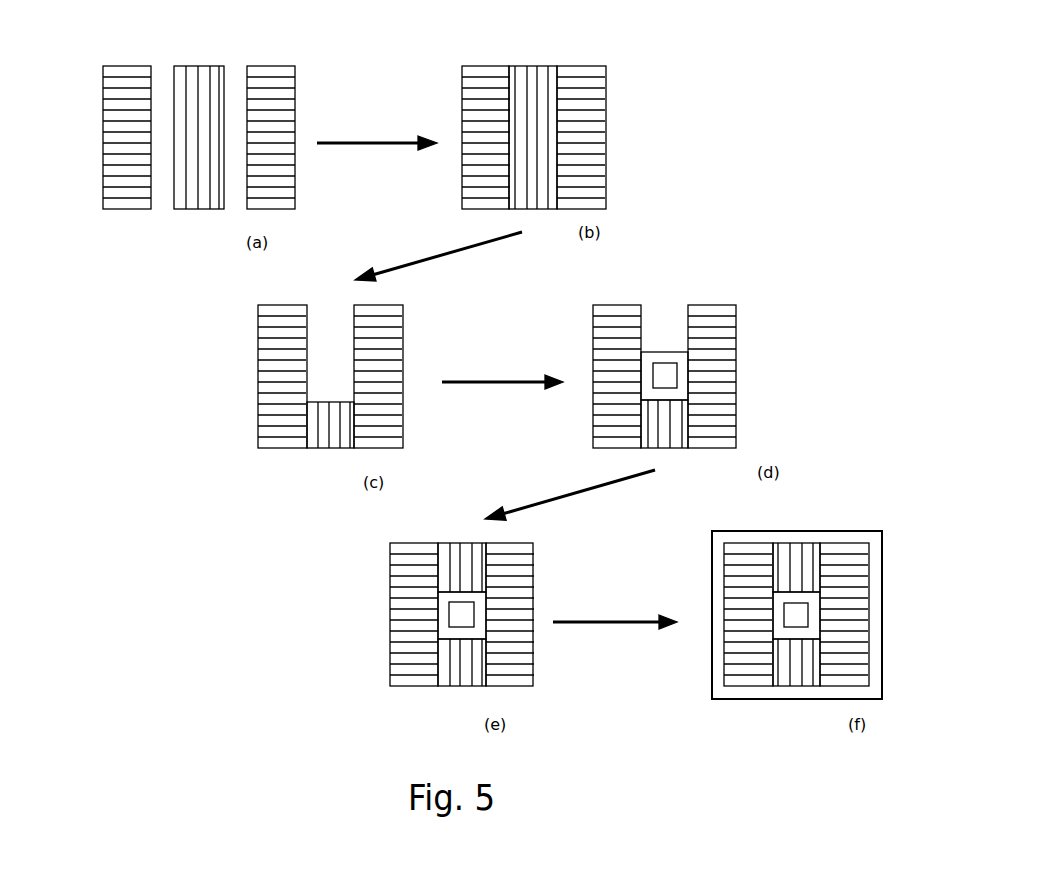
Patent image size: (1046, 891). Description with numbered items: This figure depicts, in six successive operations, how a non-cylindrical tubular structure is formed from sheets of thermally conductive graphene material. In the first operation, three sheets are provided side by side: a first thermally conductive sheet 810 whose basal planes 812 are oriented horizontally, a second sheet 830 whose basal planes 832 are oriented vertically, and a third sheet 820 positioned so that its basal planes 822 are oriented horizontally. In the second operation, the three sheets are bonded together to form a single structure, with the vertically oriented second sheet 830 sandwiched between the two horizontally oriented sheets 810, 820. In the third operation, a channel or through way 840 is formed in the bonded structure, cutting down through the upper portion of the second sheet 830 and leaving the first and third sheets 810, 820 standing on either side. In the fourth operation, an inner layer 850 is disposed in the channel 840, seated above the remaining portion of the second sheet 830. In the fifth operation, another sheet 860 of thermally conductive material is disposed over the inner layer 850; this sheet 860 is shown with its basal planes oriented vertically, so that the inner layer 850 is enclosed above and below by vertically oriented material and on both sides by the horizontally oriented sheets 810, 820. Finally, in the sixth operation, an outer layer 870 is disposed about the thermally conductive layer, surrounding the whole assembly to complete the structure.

The first thermally conductive sheet 810 is at (127, 66).
The basal planes 812 is at (127, 125).
The third sheet 820 is at (272, 66).
The basal planes 822 is at (282, 110).
The second sheet 830 is at (198, 66).
The basal planes 832 is at (198, 205).
The channel or through way 840 is at (329, 318).
The inner layer 850 is at (665, 352).
The sheet 860 is at (462, 543).
The outer layer 870 is at (882, 567).